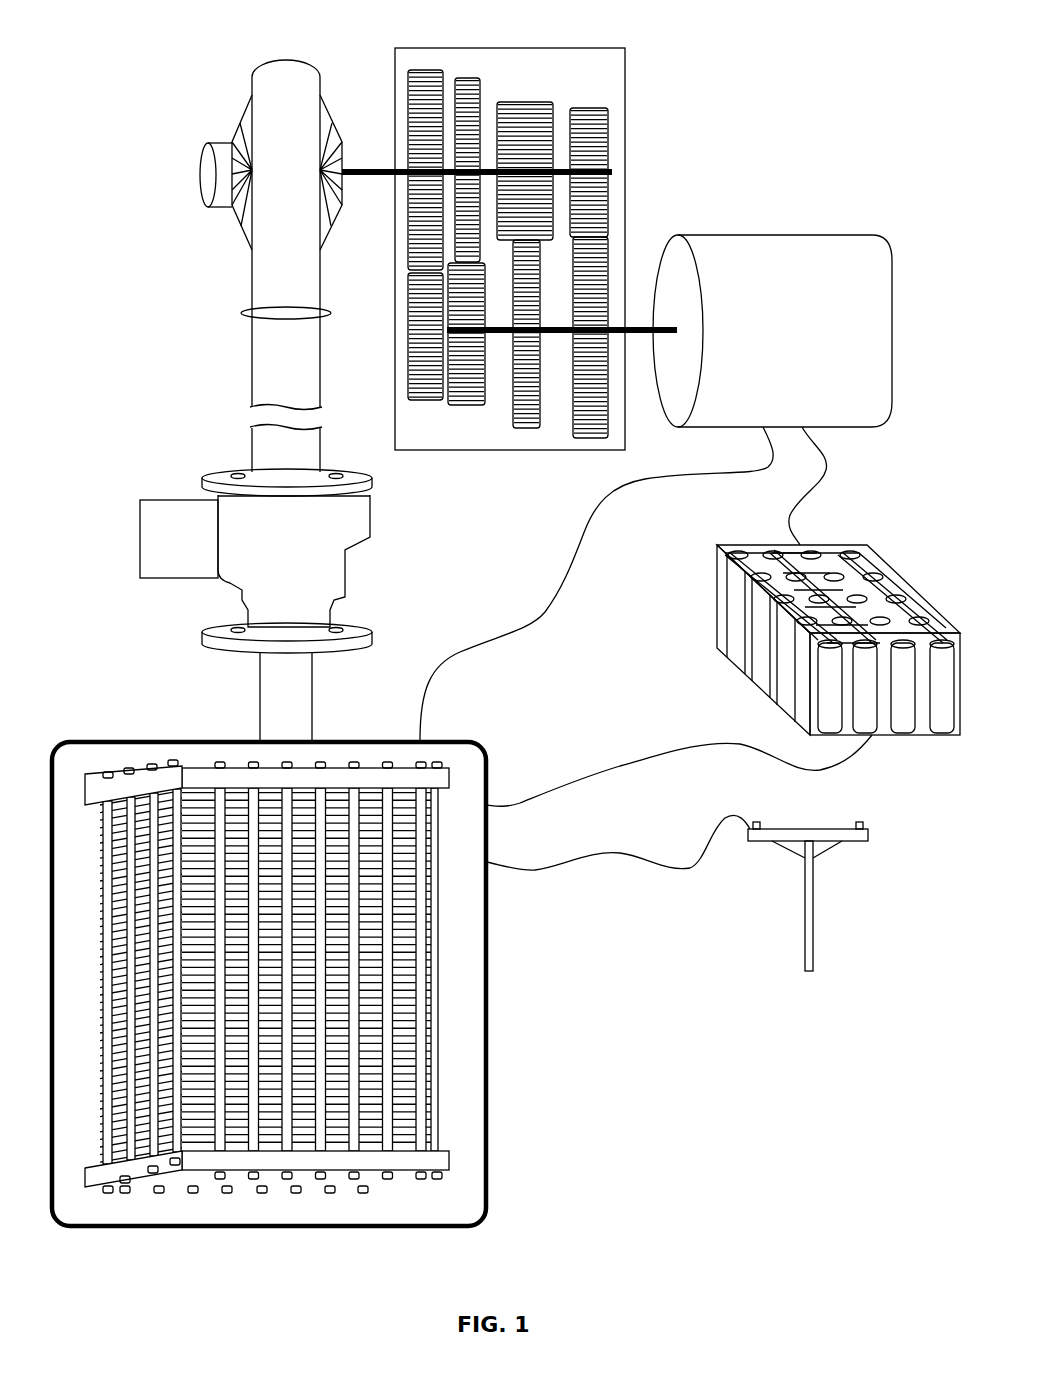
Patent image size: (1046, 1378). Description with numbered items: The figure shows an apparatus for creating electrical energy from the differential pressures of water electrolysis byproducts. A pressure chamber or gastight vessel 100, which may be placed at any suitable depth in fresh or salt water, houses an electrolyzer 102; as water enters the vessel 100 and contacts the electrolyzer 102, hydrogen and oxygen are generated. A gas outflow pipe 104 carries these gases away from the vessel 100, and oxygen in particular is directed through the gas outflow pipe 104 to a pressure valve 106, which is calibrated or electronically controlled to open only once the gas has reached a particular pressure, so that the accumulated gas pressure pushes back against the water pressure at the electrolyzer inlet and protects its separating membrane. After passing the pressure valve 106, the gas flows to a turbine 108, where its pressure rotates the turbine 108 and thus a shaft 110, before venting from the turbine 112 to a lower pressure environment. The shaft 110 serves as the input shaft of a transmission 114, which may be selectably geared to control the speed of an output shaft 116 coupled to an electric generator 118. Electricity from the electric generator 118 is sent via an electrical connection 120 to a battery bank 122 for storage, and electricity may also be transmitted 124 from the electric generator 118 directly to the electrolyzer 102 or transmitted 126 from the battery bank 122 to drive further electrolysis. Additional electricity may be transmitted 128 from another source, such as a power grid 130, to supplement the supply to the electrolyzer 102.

The gastight vessel 100 is at (100, 738).
The electrolyzer 102 is at (437, 1017).
The gas outflow pipe 104 is at (270, 713).
The pressure valve 106 is at (333, 563).
The turbine 108 is at (263, 217).
The shaft 110 is at (373, 177).
The turbine vent 112 is at (207, 158).
The transmission 114 is at (452, 47).
The output shaft 116 is at (643, 338).
The electric generator 118 is at (737, 233).
The electrical connection 120 is at (850, 481).
The battery bank 122 is at (776, 542).
The electricity transmission 124 is at (575, 540).
The electricity transmission 126 is at (645, 757).
The electricity transmission 128 is at (658, 884).
The power grid 130 is at (809, 892).